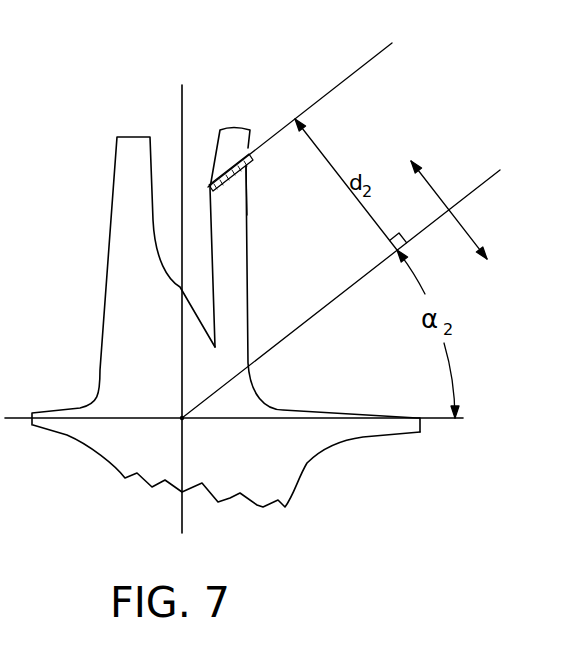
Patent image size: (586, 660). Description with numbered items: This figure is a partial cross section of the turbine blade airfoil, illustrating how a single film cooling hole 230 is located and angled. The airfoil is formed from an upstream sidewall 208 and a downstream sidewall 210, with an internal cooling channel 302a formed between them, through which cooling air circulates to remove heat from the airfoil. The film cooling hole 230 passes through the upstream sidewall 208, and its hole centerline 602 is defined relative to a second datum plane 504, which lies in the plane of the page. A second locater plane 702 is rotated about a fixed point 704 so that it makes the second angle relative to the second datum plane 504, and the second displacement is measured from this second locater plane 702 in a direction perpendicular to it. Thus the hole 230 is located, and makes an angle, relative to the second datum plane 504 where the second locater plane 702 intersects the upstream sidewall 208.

The downstream sidewall 210 is at (130, 135).
The upstream sidewall 208 is at (237, 127).
The internal cooling channel 302a is at (198, 133).
The film cooling hole 230 is at (250, 155).
The hole centerline 602 is at (245, 200).
The second locater plane 702 is at (373, 57).
The fixed point 704 is at (182, 418).
The second datum plane 504 is at (442, 421).